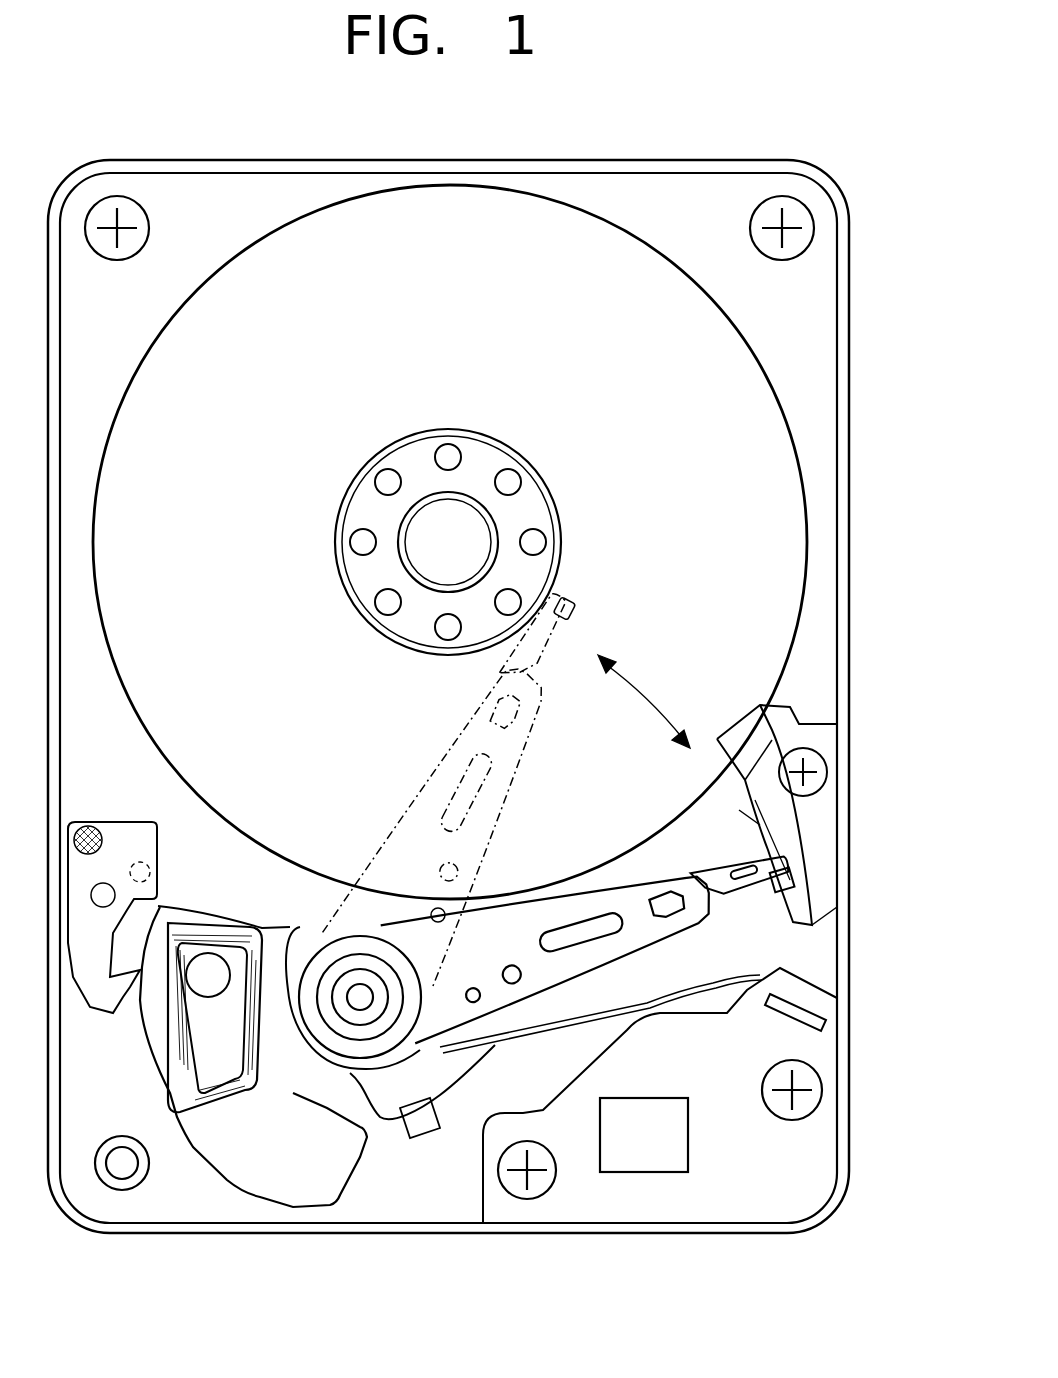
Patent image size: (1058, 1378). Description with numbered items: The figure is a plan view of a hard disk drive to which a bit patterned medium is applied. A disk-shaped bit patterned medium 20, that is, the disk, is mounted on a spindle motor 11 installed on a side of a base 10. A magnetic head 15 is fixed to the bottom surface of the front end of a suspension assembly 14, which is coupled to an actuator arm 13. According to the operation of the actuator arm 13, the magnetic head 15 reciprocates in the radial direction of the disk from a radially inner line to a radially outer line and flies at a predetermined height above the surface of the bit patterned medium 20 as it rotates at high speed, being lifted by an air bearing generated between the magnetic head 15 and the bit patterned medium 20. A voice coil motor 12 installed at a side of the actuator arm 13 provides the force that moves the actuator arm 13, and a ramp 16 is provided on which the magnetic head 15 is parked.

The base 10 is at (826, 352).
The spindle motor 11 is at (487, 455).
The voice coil motor 12 is at (230, 1190).
The actuator arm 13 is at (517, 757).
The suspension assembly 14 is at (540, 670).
The magnetic head 15 is at (580, 594).
The ramp 16 is at (778, 825).
The bit patterned medium 20 is at (795, 537).